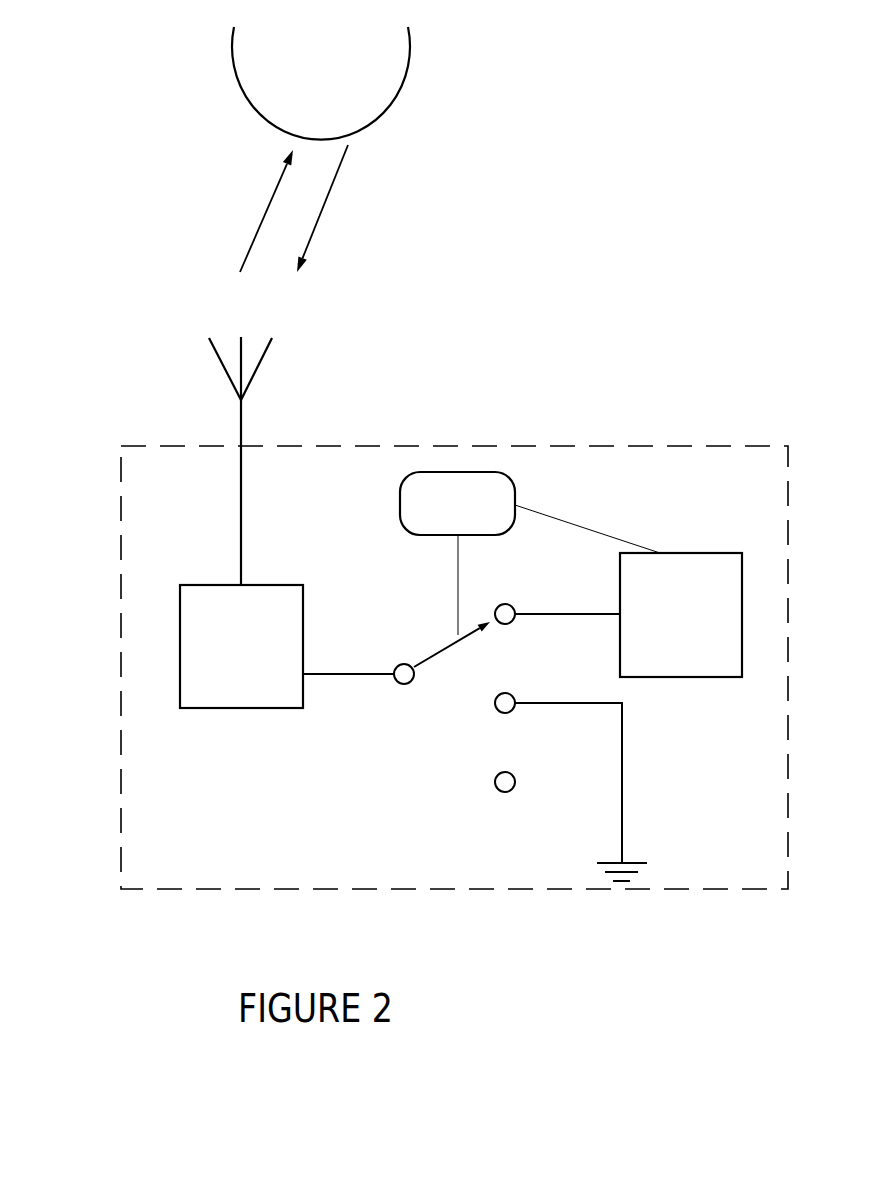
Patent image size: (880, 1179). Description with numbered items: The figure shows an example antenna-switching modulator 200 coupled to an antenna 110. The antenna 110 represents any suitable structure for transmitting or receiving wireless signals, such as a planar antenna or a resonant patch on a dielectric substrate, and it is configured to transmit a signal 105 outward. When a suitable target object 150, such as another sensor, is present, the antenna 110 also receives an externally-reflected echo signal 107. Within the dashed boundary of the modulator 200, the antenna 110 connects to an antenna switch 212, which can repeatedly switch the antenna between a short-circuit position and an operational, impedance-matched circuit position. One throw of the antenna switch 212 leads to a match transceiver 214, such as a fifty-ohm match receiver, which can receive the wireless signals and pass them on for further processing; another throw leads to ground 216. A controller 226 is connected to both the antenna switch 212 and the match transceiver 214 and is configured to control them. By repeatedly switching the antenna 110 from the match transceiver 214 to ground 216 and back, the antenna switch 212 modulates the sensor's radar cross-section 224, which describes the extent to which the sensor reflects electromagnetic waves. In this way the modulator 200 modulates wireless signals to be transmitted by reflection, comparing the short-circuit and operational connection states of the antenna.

The signal 105 is at (253, 211).
The externally-reflected echo signal 107 is at (346, 208).
The antenna 110 is at (248, 385).
The target object 150 is at (400, 77).
The antenna-switching modulator 200 is at (721, 921).
The antenna switch 212 is at (423, 663).
The match transceiver 214 is at (742, 613).
The ground 216 is at (620, 840).
The cross-section 224 is at (180, 630).
The controller 226 is at (452, 472).